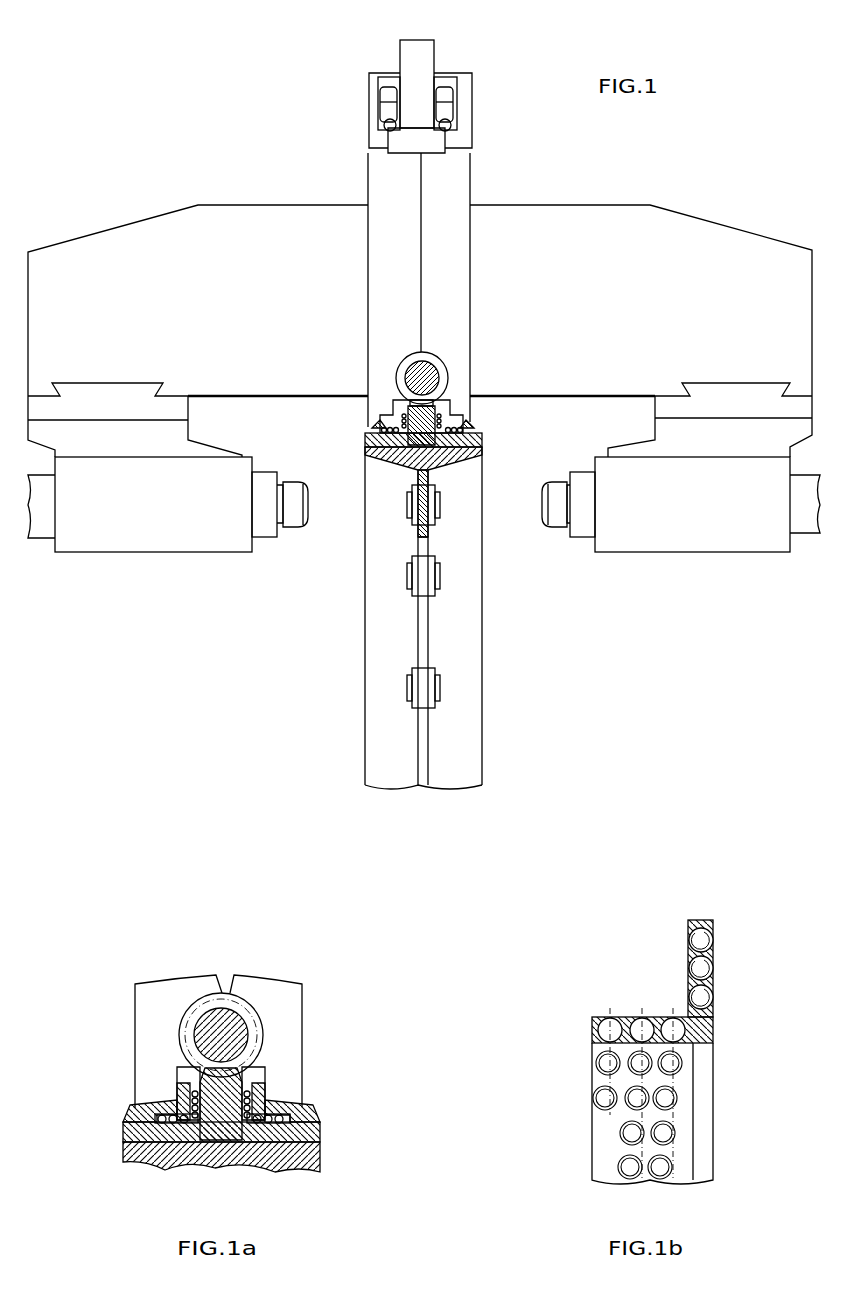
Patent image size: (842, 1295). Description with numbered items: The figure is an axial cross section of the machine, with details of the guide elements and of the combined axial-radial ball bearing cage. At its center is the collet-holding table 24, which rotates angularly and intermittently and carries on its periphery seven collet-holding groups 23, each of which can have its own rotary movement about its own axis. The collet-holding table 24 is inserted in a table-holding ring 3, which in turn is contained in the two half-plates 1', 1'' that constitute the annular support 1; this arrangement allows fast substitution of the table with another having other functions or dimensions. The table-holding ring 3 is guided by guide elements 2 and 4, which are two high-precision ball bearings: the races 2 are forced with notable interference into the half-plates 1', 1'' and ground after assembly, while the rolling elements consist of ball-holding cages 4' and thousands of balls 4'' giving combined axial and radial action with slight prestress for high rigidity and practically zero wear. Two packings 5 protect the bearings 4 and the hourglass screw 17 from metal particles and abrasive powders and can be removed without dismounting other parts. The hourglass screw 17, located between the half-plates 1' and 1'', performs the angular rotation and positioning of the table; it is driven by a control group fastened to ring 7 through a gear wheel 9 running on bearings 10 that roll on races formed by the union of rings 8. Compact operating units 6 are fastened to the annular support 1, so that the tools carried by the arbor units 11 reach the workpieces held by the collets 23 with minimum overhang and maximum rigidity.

In FIG. 1, the annular support 1 is at (439, 290).
In FIG. 1, the half-plate 1' is at (483, 171).
In FIG. 1, the half-plate 1'' is at (357, 171).
In FIG. 1A, the guide element 2 is at (263, 1097).
In FIG. 1, the table-holding ring 3 is at (482, 438).
In FIG. 1A, the ball bearing 4 is at (259, 1093).
In FIG. 1A, the ball-holding cage 4' is at (201, 1095).
In FIG. 1B, the ball-holding cage 4' is at (668, 968).
In FIG. 1A, the balls 4'' is at (186, 1161).
In FIG. 1B, the balls 4'' is at (627, 1029).
In FIG. 1, the packing 5 is at (377, 418).
In FIG. 1A, the packing 5 is at (310, 1117).
In FIG. 1, the operating unit 6 is at (688, 235).
In FIG. 1, the ring 7 is at (423, 62).
In FIG. 1, the ring 8 is at (463, 115).
In FIG. 1, the gear wheel 9 is at (445, 108).
In FIG. 1, the bearing 10 is at (388, 127).
In FIG. 1, the arbor unit 11 is at (167, 537).
In FIG. 1, the hourglass screw 17 is at (438, 370).
In FIG. 1A, the hourglass screw 17 is at (229, 1000).
In FIG. 1, the collet-holding group 23 is at (440, 508).
In FIG. 1, the collet-holding table 24 is at (455, 462).
In FIG. 1A, the collet-holding table 24 is at (257, 1153).